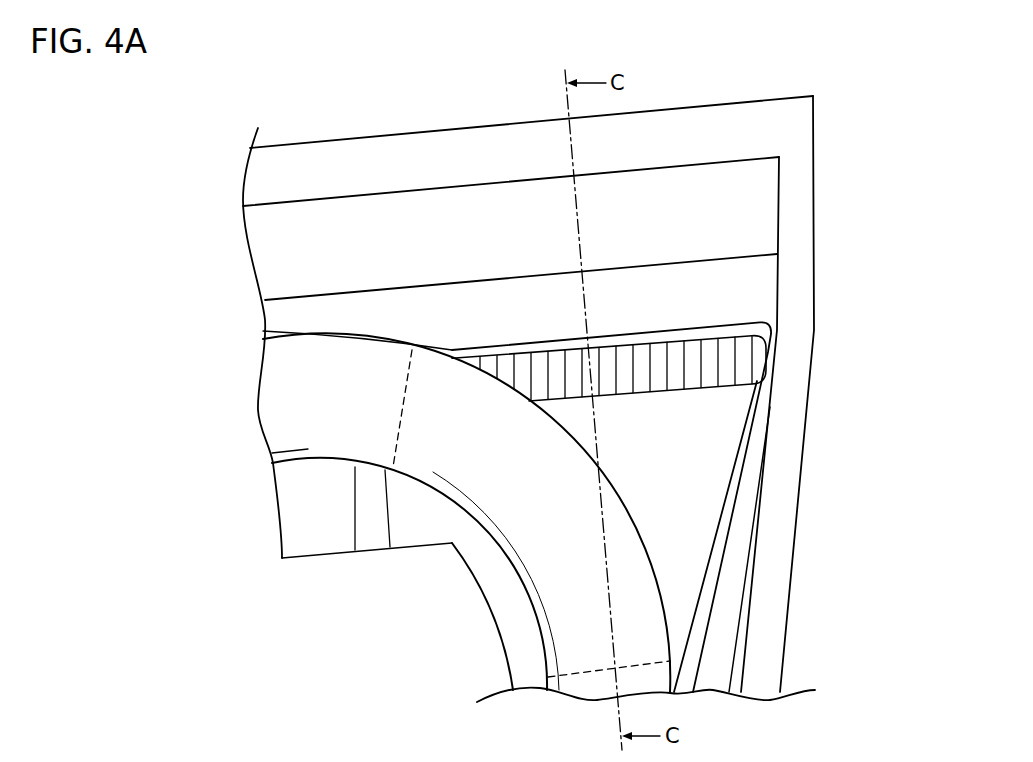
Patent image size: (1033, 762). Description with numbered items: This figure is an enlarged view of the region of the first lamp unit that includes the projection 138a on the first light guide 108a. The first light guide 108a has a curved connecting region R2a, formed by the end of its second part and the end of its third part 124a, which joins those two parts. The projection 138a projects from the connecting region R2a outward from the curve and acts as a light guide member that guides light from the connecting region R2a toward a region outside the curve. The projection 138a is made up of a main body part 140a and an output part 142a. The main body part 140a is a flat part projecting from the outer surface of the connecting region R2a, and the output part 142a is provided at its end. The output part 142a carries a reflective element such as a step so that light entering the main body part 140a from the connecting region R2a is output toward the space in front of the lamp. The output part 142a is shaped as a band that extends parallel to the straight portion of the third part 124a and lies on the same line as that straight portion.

The first light guide 108a is at (249, 406).
The third part 124a is at (280, 368).
The projection 138a is at (788, 365).
The output part 142a is at (726, 350).
The main body part 140a is at (702, 510).
The connecting region R2a is at (492, 488).